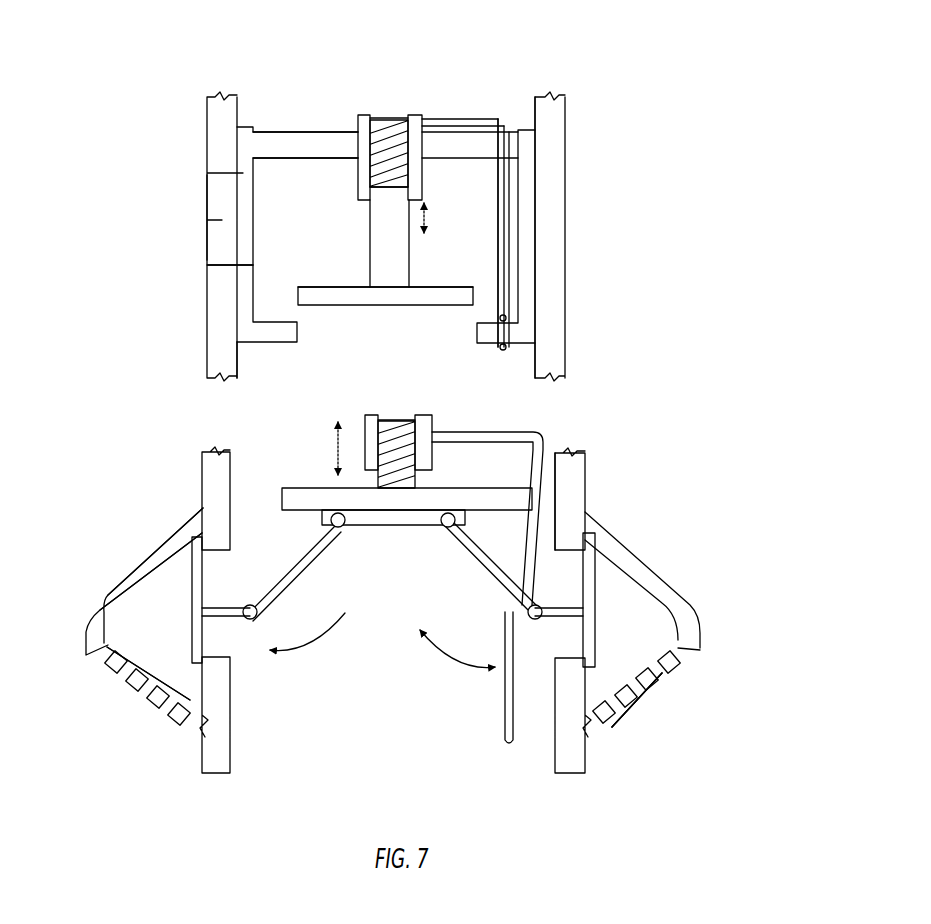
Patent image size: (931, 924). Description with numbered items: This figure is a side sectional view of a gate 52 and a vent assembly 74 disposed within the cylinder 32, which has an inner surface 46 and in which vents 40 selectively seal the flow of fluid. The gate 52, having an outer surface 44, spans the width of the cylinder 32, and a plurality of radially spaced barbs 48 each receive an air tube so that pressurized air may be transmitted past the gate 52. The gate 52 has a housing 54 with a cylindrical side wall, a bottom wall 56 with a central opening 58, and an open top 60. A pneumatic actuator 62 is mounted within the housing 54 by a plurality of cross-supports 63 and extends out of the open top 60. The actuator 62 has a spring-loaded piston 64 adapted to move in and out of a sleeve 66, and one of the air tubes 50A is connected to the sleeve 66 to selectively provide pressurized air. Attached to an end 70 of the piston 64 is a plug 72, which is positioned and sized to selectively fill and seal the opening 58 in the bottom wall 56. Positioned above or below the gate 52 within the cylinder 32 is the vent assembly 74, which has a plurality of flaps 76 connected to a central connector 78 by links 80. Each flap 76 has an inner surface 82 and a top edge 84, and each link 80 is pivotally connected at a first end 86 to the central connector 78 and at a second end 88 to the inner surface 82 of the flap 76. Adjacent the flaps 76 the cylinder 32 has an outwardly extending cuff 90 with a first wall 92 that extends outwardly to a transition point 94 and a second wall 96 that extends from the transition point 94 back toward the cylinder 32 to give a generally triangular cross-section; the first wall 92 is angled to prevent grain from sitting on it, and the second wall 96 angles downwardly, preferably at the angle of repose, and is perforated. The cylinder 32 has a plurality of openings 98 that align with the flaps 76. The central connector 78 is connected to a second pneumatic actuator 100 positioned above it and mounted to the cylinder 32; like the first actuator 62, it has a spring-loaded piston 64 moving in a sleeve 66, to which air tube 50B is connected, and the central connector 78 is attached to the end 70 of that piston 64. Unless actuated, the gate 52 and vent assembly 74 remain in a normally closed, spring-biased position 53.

The cylinder 32 is at (220, 222).
The vent 40 is at (667, 670).
The outer surface 44 is at (207, 175).
The inner surface 46 is at (535, 102).
The barb 48 is at (522, 352).
The air tube 50A is at (505, 120).
The air tube 50B is at (565, 343).
The gate 52 is at (662, 152).
The normally closed, spring-biased position 53 is at (398, 127).
The housing 54 is at (200, 265).
The bottom wall 56 is at (250, 342).
The central opening 58 is at (310, 327).
The open top 60 is at (318, 102).
The pneumatic actuator 62 is at (430, 185).
The cross-support 63 is at (278, 127).
The spring-loaded piston 64 is at (370, 253).
The sleeve 66 is at (425, 168).
The end of piston 70 is at (393, 305).
The plug 72 is at (437, 305).
The vent assembly 74 is at (683, 527).
The flap 76 is at (205, 597).
The central connector 78 is at (480, 488).
The link 80 is at (305, 563).
The inner surface 82 is at (177, 653).
The top edge 84 is at (182, 530).
The first end 86 is at (265, 610).
The second end 88 is at (437, 528).
The cuff 90 is at (133, 548).
The first wall 92 is at (173, 533).
The transition point 94 is at (85, 647).
The second wall 96 is at (128, 690).
The opening 98 is at (175, 620).
The second pneumatic actuator 100 is at (362, 432).